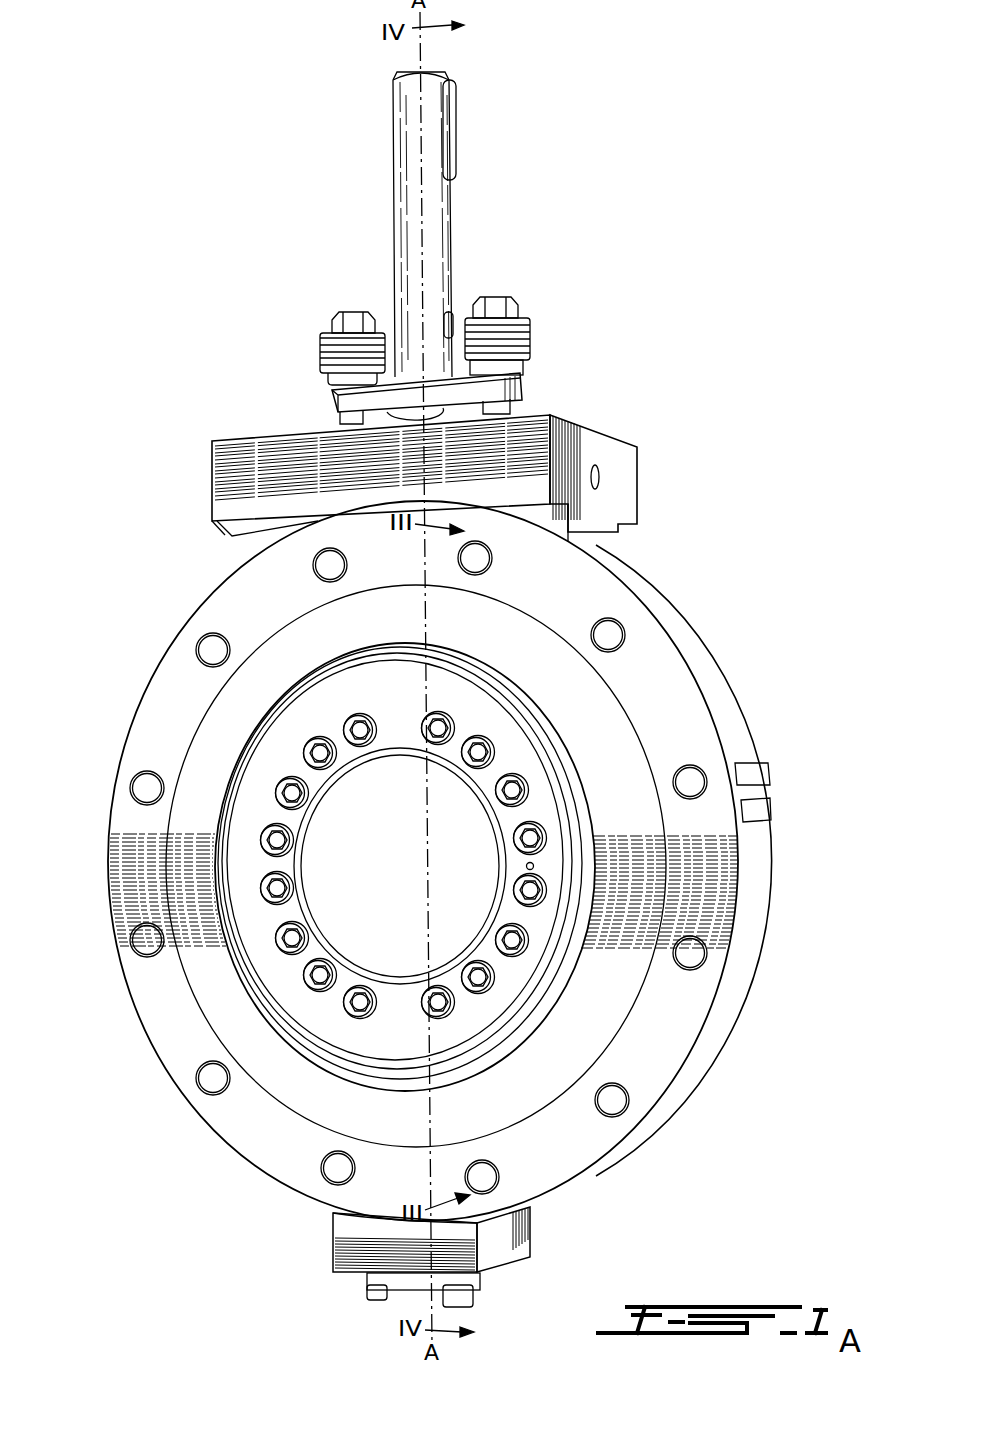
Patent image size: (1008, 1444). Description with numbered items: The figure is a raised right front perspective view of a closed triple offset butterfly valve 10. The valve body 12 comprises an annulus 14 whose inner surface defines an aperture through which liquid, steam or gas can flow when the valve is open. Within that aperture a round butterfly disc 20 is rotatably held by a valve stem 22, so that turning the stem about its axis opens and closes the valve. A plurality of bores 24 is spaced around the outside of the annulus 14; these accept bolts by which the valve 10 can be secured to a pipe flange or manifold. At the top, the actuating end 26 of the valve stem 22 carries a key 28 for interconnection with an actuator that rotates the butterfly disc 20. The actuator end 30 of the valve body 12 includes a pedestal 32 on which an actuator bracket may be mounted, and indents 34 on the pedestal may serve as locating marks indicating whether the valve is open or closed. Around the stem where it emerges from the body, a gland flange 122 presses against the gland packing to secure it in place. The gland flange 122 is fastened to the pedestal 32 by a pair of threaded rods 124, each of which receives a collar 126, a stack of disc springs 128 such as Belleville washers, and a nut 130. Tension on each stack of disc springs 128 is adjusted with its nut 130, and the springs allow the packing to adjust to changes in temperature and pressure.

The butterfly valve 10 is at (740, 228).
The valve body 12 is at (235, 440).
The annulus 14 is at (178, 696).
The butterfly disc 20 is at (295, 975).
The valve stem 22 is at (436, 216).
The bores 24 is at (692, 955).
The actuating end 26 is at (394, 73).
The key 28 is at (455, 128).
The actuator end 30 is at (636, 446).
The pedestal 32 is at (600, 443).
The indents 34 is at (603, 477).
The gland flange 122 is at (437, 384).
The threaded rods 124 is at (348, 425).
The collar 126 is at (335, 380).
The stack of disc springs 128 is at (530, 345).
The nut 130 is at (345, 312).